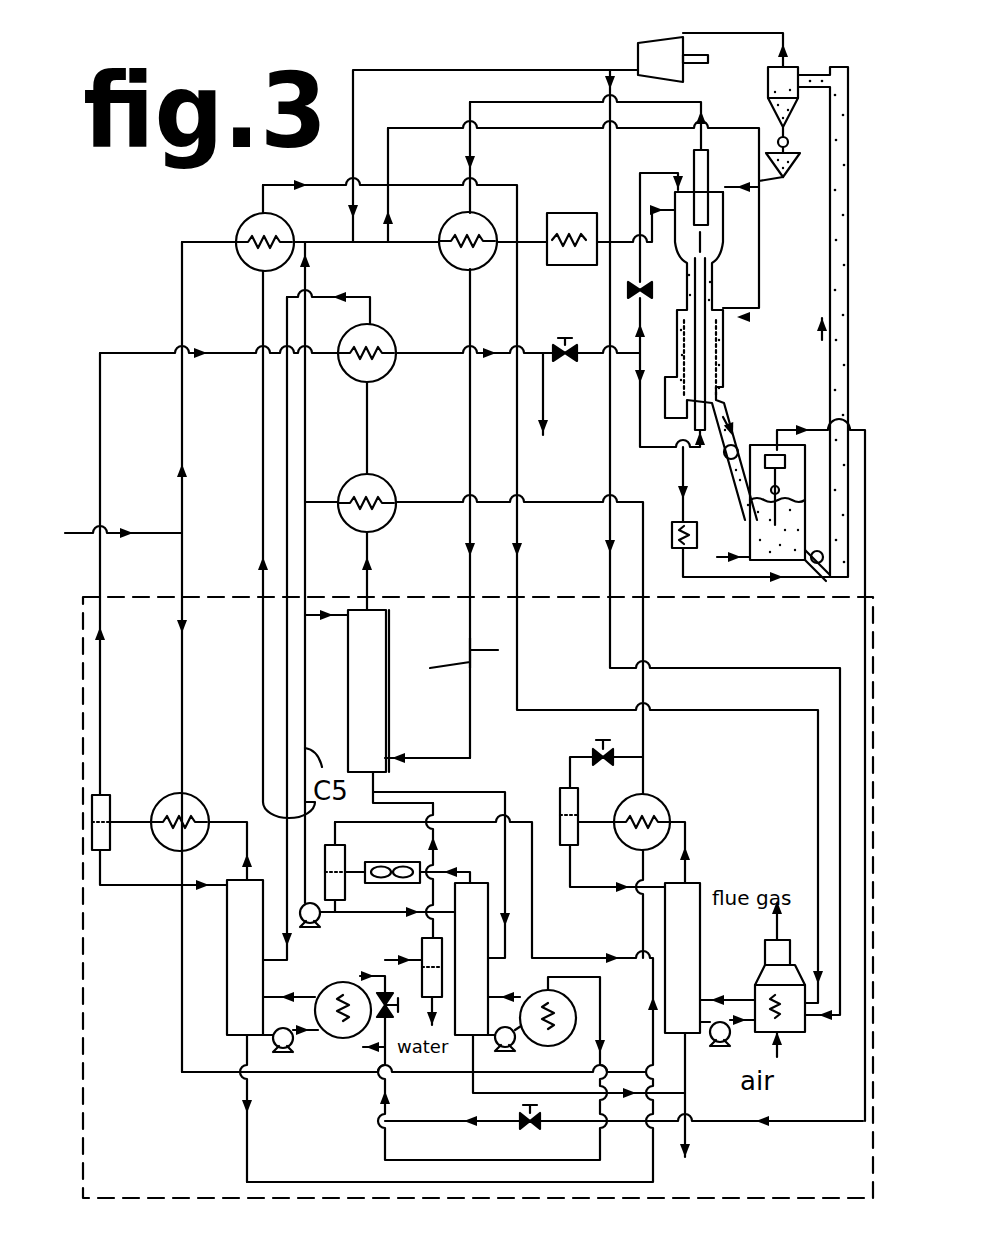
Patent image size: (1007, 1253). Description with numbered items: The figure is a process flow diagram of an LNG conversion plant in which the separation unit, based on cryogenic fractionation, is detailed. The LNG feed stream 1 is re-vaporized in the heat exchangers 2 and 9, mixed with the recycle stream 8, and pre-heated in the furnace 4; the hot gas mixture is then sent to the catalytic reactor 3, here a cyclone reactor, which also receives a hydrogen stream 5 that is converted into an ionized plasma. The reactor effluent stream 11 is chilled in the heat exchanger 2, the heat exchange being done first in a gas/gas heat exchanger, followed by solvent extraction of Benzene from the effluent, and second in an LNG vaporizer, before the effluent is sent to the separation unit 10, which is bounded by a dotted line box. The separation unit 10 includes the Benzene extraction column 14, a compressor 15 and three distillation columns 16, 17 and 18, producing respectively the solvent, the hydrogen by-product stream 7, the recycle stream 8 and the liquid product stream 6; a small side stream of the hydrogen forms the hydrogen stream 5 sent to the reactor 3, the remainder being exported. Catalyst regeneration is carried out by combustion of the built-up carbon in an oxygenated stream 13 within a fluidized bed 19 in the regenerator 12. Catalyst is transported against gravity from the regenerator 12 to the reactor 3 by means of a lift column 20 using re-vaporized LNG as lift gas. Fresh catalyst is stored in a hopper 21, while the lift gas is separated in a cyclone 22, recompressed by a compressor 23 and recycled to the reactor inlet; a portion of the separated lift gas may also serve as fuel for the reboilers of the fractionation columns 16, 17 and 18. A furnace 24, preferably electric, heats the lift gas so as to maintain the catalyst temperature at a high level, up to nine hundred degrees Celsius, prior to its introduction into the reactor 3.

The LNG feed stream 1 is at (153, 530).
The heat exchanger 2 is at (262, 270).
The catalytic reactor 3 is at (722, 262).
The furnace 4 is at (580, 266).
The hydrogen stream 5 is at (588, 358).
The liquid product stream 6 is at (690, 1128).
The hydrogen by-product stream 7 is at (103, 790).
The recycle stream 8 is at (646, 742).
The heat exchanger 9 is at (393, 366).
The separation unit 10 is at (90, 1186).
The reactor effluent stream 11 is at (467, 117).
The regenerator 12 is at (760, 580).
The oxygenated stream 13 is at (718, 582).
The Benzene extraction column 14 is at (387, 650).
The compressor 15 is at (470, 655).
The distillation column 16 is at (490, 886).
The distillation column 17 is at (263, 884).
The distillation column 18 is at (702, 884).
The fluidized bed 19 is at (762, 527).
The solids riser 20 is at (828, 413).
The hopper 21 is at (785, 180).
The cyclone 22 is at (797, 68).
The compressor 23 is at (638, 55).
The furnace 24 is at (672, 520).